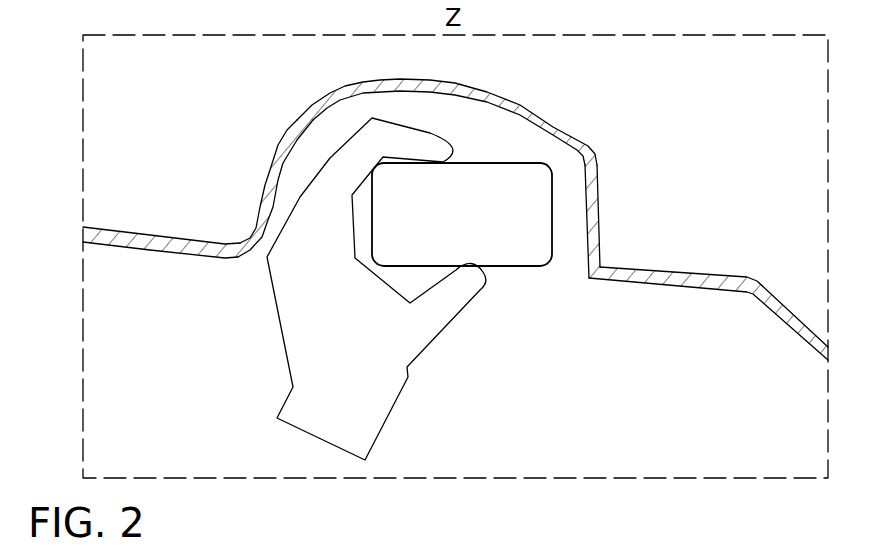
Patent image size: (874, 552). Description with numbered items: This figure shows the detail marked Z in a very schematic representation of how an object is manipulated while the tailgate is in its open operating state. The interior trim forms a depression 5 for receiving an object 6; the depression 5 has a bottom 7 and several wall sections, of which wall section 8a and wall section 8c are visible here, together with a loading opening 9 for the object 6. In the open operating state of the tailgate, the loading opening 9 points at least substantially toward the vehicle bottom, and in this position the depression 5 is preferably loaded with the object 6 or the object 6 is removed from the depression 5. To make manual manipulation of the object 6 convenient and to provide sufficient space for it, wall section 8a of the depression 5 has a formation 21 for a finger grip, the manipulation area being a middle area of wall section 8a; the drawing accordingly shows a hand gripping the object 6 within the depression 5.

The depression 5 is at (455, 203).
The object 6 is at (523, 266).
The bottom 7 is at (483, 92).
The wall section 8a is at (198, 177).
The wall section 8c is at (603, 195).
The loading opening 9 is at (572, 288).
The formation for a finger grip 21 is at (292, 157).